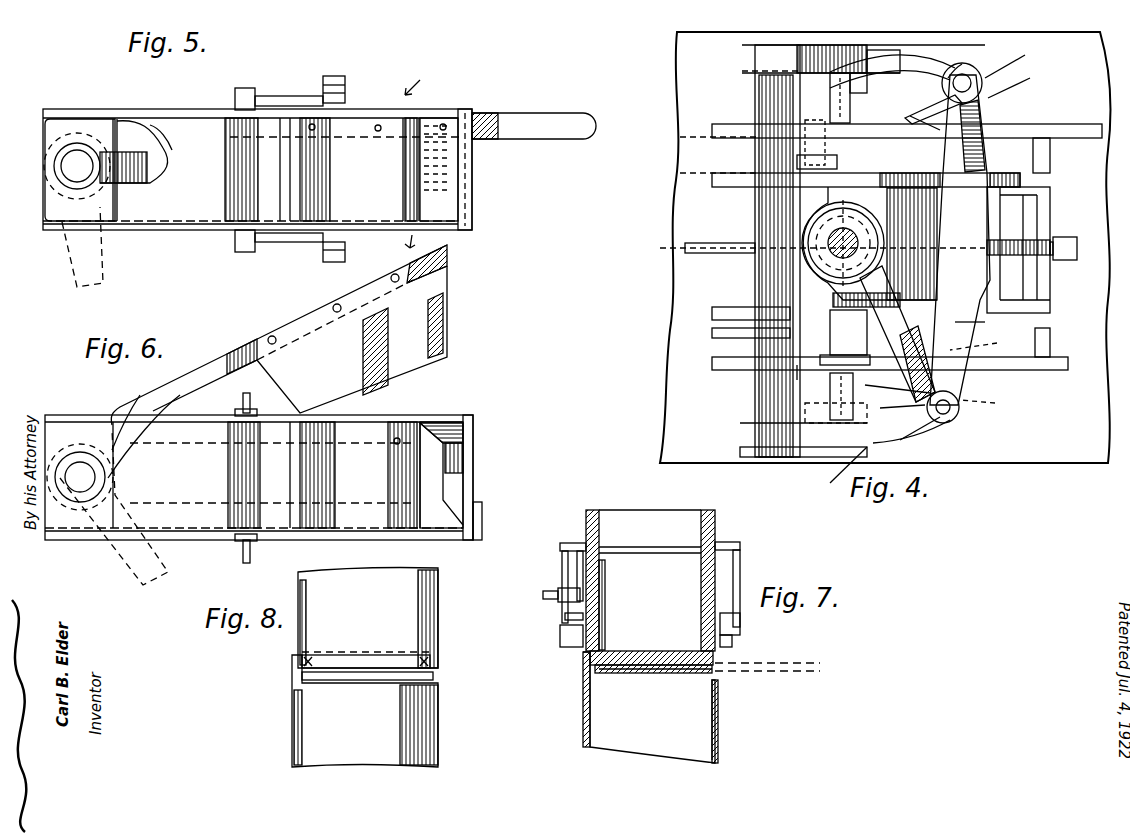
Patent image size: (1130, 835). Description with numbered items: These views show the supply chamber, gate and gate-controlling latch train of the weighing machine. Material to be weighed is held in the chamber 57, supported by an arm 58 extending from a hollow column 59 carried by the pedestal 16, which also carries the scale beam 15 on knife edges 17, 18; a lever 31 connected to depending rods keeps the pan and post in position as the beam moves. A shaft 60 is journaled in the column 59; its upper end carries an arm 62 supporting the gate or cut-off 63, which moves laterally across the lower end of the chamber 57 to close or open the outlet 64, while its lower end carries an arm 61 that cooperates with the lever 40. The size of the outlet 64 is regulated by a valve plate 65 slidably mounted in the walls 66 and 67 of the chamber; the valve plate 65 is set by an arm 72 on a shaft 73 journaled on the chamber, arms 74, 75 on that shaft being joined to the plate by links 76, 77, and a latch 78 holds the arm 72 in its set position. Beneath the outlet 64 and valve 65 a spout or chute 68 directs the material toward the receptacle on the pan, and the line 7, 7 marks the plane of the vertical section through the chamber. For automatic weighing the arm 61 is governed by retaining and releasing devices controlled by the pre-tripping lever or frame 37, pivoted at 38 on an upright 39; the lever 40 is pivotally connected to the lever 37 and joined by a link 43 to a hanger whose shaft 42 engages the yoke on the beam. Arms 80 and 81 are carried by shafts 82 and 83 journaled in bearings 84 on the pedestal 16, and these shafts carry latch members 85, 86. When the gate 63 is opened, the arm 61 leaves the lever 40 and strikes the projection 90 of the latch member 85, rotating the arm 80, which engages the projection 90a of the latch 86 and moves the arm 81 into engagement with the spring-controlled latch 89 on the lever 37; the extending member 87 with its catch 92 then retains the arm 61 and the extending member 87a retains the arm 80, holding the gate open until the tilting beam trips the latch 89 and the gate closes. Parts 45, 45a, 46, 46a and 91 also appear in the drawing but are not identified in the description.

In FIG. 5, the section line 7 is at (419, 159).
In FIG. 4, the beam 15 is at (1040, 124).
In FIG. 4, the pedestal 16 is at (760, 385).
In FIG. 4, the knife edge 17 is at (845, 100).
In FIG. 4, the knife edge 18 is at (855, 410).
In FIG. 4, the lever 31 is at (712, 245).
In FIG. 4, the pre-tripping lever or frame 37 is at (720, 173).
In FIG. 4, the pivot 38 is at (810, 130).
In FIG. 4, the upright 39 is at (838, 160).
In FIG. 4, the lever 40 is at (845, 337).
In FIG. 4, the shaft 42 is at (841, 471).
In FIG. 4, the link 43 is at (718, 340).
In FIG. 4, the housing 45 is at (1040, 215).
In FIG. 4, the housing extension 45a is at (922, 325).
In FIG. 4, the bolt 46 is at (1065, 261).
In FIG. 4, the bolt head 46a is at (905, 173).
In FIG. 5, the chamber 57 is at (474, 193).
In FIG. 6, the chamber 57 is at (475, 463).
In FIG. 7, the chamber 57 is at (650, 580).
In FIG. 8, the chamber 57 is at (440, 580).
In FIG. 5, the arm 58 is at (92, 170).
In FIG. 6, the arm 58 is at (144, 461).
In FIG. 4, the arm 58 is at (796, 372).
In FIG. 4, the hollow column 59 is at (805, 263).
In FIG. 5, the shaft 60 is at (54, 167).
In FIG. 6, the shaft 60 is at (80, 470).
In FIG. 4, the shaft 60 is at (805, 235).
In FIG. 5, the arm 61 is at (70, 262).
In FIG. 6, the arm 61 is at (118, 550).
In FIG. 4, the arm 61 is at (897, 334).
In FIG. 5, the arm 62 is at (530, 106).
In FIG. 6, the arm 62 is at (440, 262).
In FIG. 8, the arm 62 is at (405, 678).
In FIG. 5, the gate or cut-off 63 is at (447, 172).
In FIG. 6, the gate or cut-off 63 is at (446, 332).
In FIG. 7, the gate or cut-off 63 is at (793, 665).
In FIG. 8, the gate or cut-off 63 is at (380, 680).
In FIG. 6, the outlet 64 is at (441, 474).
In FIG. 7, the outlet 64 is at (650, 670).
In FIG. 5, the valve plate 65 is at (235, 190).
In FIG. 6, the valve plate 65 is at (398, 428).
In FIG. 7, the valve plate 65 is at (692, 640).
In FIG. 8, the valve plate 65 is at (368, 650).
In FIG. 5, the wall 66 is at (218, 109).
In FIG. 6, the wall 66 is at (216, 415).
In FIG. 7, the wall 66 is at (702, 533).
In FIG. 5, the wall 67 is at (200, 231).
In FIG. 6, the wall 67 is at (205, 541).
In FIG. 7, the wall 67 is at (600, 532).
In FIG. 6, the spout or chute 68 is at (458, 448).
In FIG. 7, the spout or chute 68 is at (718, 712).
In FIG. 8, the spout or chute 68 is at (440, 708).
In FIG. 7, the arm 72 is at (562, 578).
In FIG. 7, the shaft 73 is at (655, 553).
In FIG. 5, the arm 74 is at (338, 78).
In FIG. 7, the arm 74 is at (561, 560).
In FIG. 7, the arm 75 is at (740, 565).
In FIG. 5, the link 76 is at (298, 96).
In FIG. 7, the link 76 is at (560, 634).
In FIG. 7, the link 77 is at (735, 627).
In FIG. 7, the latch 78 is at (543, 596).
In FIG. 4, the arm 80 is at (975, 385).
In FIG. 4, the arm 81 is at (982, 125).
In FIG. 4, the shaft 82 is at (950, 413).
In FIG. 4, the shaft 83 is at (972, 80).
In FIG. 4, the bearings 84 is at (926, 62).
In FIG. 4, the latch member 85 is at (912, 420).
In FIG. 4, the latch member 86 is at (963, 72).
In FIG. 4, the extending member 87 is at (895, 395).
In FIG. 4, the extending member 87a is at (925, 114).
In FIG. 4, the spring controlled latch 89 is at (985, 318).
In FIG. 4, the projection 90 is at (984, 341).
In FIG. 4, the projection 90a is at (1023, 80).
In FIG. 4, the spring 91 is at (1003, 226).
In FIG. 4, the catch 92 is at (907, 110).